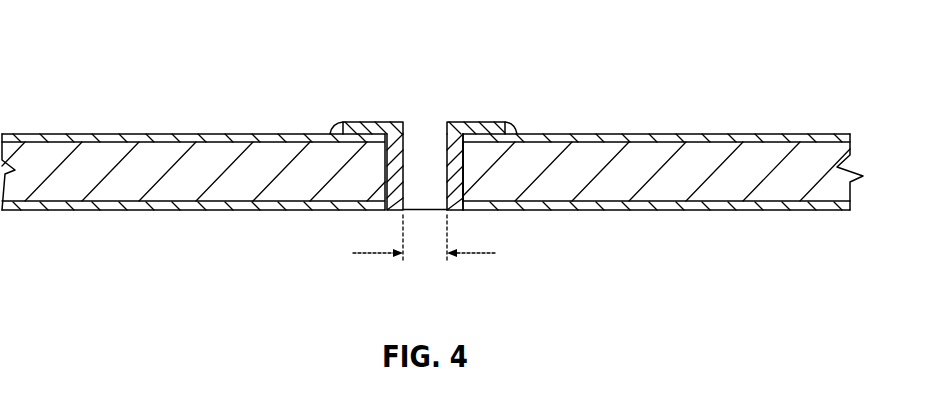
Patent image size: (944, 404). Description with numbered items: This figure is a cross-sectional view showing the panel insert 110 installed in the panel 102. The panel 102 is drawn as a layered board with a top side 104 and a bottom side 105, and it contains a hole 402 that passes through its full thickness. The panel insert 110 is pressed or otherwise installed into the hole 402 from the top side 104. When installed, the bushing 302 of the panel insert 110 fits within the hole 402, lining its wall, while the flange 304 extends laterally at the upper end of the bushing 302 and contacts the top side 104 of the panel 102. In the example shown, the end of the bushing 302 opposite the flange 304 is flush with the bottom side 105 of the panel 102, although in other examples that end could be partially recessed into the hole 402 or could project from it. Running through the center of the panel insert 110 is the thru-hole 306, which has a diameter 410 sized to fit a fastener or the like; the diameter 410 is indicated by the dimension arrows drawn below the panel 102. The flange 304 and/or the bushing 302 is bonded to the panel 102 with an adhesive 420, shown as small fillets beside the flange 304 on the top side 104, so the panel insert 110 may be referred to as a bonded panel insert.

The panel 102 is at (757, 134).
The top side 104 is at (108, 121).
The bottom side 105 is at (114, 223).
The panel insert 110 is at (425, 162).
The bushing 302 is at (397, 165).
The flange 304 is at (360, 122).
The thru-hole 306 is at (435, 131).
The hole 402 is at (468, 173).
The diameter 410 is at (382, 255).
The adhesive 420 is at (333, 128).